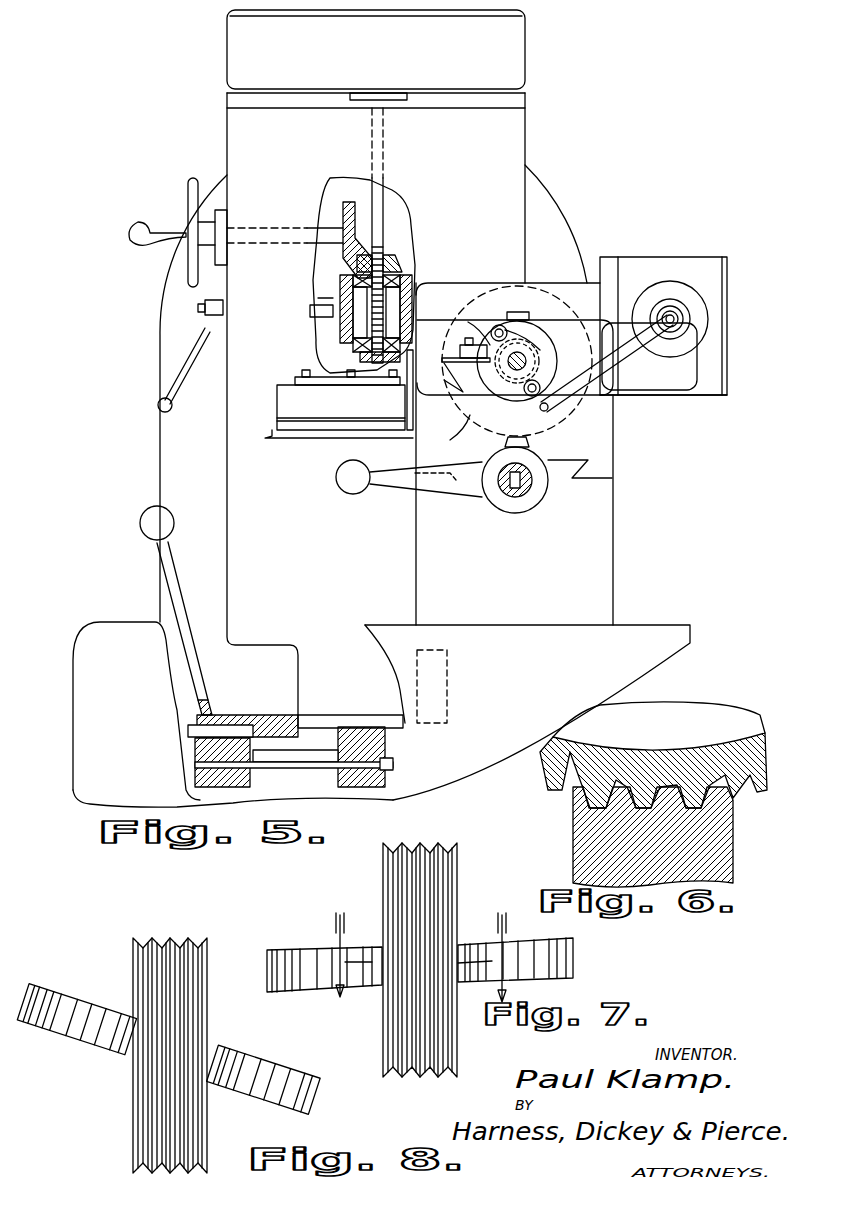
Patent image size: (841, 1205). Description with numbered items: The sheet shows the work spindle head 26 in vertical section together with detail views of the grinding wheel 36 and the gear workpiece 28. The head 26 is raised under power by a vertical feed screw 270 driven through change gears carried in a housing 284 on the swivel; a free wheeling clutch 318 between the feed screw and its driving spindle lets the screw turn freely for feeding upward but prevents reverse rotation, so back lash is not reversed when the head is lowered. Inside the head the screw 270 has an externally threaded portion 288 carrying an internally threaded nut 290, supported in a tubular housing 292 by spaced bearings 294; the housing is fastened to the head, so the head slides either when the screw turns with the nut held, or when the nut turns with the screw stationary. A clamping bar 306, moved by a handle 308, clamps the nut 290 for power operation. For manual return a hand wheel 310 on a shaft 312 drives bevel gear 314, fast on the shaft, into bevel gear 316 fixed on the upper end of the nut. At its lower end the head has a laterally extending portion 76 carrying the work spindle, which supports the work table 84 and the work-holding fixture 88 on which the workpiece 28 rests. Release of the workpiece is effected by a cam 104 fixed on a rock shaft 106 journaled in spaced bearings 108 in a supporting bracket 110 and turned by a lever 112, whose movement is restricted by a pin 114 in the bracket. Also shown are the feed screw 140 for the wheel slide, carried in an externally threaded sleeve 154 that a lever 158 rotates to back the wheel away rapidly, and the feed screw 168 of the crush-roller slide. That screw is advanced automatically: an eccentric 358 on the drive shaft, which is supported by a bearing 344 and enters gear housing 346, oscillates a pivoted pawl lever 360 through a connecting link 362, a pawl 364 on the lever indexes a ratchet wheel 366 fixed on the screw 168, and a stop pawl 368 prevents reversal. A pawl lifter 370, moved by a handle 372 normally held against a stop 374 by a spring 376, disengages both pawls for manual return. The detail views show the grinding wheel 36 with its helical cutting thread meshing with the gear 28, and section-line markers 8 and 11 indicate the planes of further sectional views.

In FIG. 5, the housing 284 is at (510, 62).
In FIG. 5, the free wheeling clutch 318 is at (395, 99).
In FIG. 5, the work spindle head 26 is at (503, 152).
In FIG. 5, the hand wheel 310 is at (188, 195).
In FIG. 5, the shaft 312 is at (273, 225).
In FIG. 5, the handle 308 is at (185, 372).
In FIG. 5, the vertical feed screw 270 is at (380, 205).
In FIG. 5, the bevel gear 314 is at (345, 210).
In FIG. 5, the externally threaded portion 288 is at (385, 260).
In FIG. 5, the bevel gear 316 is at (405, 276).
In FIG. 5, the spaced bearings 294 is at (348, 280).
In FIG. 5, the clamping bar 306 is at (332, 303).
In FIG. 5, the tubular housing 292 is at (365, 318).
In FIG. 5, the nut 290 is at (365, 330).
In FIG. 5, the work-holding fixture 88 is at (330, 375).
In FIG. 5, the work table 84 is at (290, 403).
In FIG. 5, the pawl lifter 370 is at (510, 290).
In FIG. 5, the gear housing 346 is at (708, 283).
In FIG. 5, the eccentric 358 is at (683, 341).
In FIG. 5, the pawl 364 is at (575, 362).
In FIG. 5, the pawl lever 360 is at (530, 398).
In FIG. 5, the feed screw 168 is at (513, 379).
In FIG. 5, the stop pawl 368 is at (493, 330).
In FIG. 5, the spring 376 is at (470, 325).
In FIG. 5, the stop 374 is at (462, 345).
In FIG. 5, the handle 372 is at (455, 358).
In FIG. 5, the ratchet wheel 366 is at (530, 345).
In FIG. 5, the connecting link 362 is at (628, 355).
In FIG. 5, the bearing 344 is at (677, 390).
In FIG. 5, the section line 11 is at (445, 433).
In FIG. 5, the feed screw 140 is at (537, 487).
In FIG. 5, the externally threaded sleeve 154 is at (520, 497).
In FIG. 5, the lever 158 is at (395, 482).
In FIG. 5, the laterally extending portion 76 is at (240, 500).
In FIG. 5, the lever 112 is at (175, 572).
In FIG. 5, the supporting bracket 110 is at (283, 700).
In FIG. 5, the pin 114 is at (190, 731).
In FIG. 5, the bearings 108 is at (235, 790).
In FIG. 5, the rock shaft 106 is at (285, 768).
In FIG. 5, the cam 104 is at (393, 763).
In FIG. 6, the workpiece 28 is at (708, 716).
In FIG. 7, the workpiece 28 is at (578, 963).
In FIG. 8, the workpiece 28 is at (283, 1080).
In FIG. 6, the grinding wheel 36 is at (710, 856).
In FIG. 7, the grinding wheel 36 is at (392, 878).
In FIG. 8, the grinding wheel 36 is at (142, 968).
In FIG. 7, the section line 8 is at (421, 957).